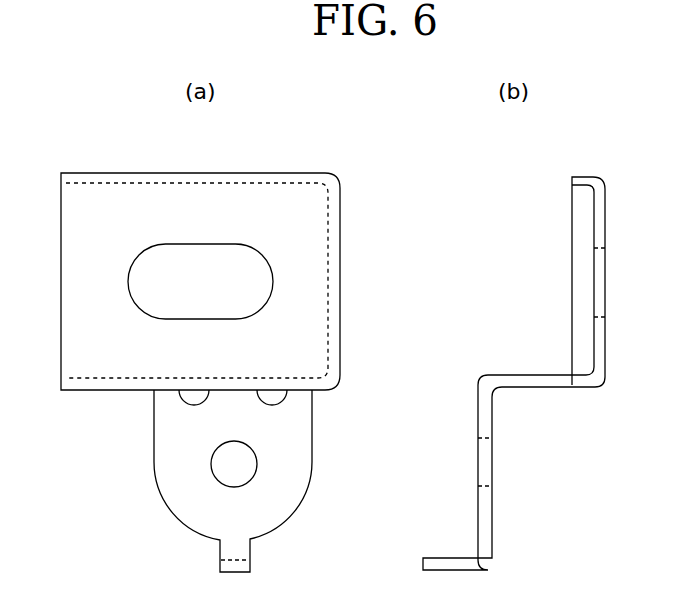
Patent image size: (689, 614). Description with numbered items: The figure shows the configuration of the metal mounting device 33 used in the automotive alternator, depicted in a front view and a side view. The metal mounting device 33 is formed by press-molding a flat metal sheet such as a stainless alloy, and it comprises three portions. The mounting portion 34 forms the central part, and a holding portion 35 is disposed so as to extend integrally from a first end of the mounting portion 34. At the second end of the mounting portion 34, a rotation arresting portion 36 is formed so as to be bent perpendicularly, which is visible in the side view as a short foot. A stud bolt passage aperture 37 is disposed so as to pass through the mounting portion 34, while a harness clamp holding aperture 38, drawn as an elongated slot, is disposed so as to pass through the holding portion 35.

The metal mounting device 33 is at (110, 142).
The mounting portion 34 is at (173, 445).
The holding portion 35 is at (313, 234).
The rotation arresting portion 36 is at (225, 562).
The stud bolt passage aperture 37 is at (216, 470).
The harness clamp holding aperture 38 is at (262, 285).